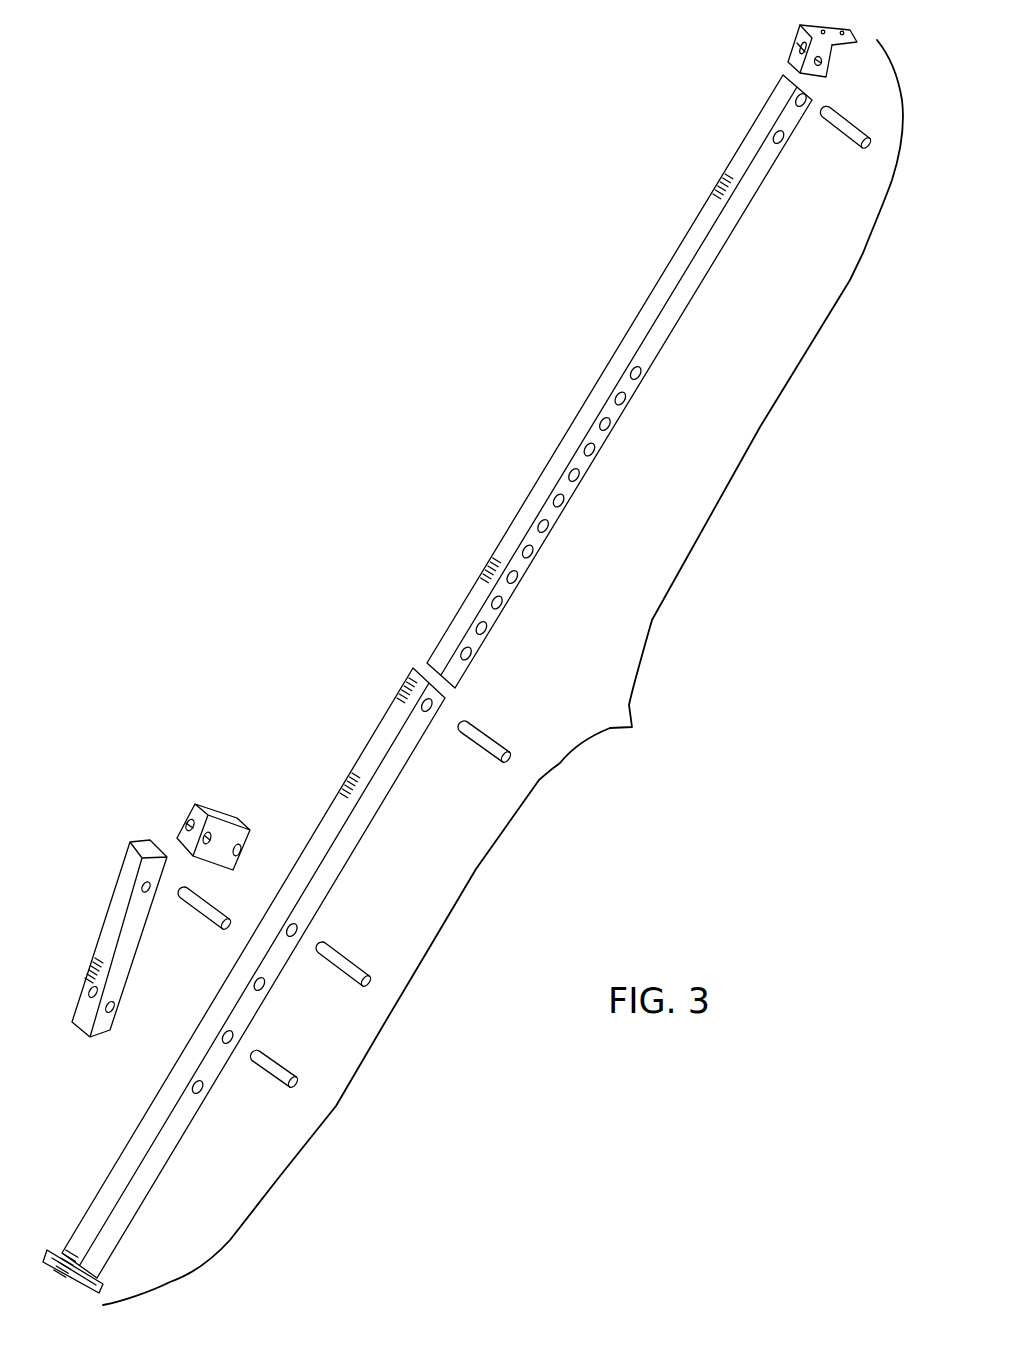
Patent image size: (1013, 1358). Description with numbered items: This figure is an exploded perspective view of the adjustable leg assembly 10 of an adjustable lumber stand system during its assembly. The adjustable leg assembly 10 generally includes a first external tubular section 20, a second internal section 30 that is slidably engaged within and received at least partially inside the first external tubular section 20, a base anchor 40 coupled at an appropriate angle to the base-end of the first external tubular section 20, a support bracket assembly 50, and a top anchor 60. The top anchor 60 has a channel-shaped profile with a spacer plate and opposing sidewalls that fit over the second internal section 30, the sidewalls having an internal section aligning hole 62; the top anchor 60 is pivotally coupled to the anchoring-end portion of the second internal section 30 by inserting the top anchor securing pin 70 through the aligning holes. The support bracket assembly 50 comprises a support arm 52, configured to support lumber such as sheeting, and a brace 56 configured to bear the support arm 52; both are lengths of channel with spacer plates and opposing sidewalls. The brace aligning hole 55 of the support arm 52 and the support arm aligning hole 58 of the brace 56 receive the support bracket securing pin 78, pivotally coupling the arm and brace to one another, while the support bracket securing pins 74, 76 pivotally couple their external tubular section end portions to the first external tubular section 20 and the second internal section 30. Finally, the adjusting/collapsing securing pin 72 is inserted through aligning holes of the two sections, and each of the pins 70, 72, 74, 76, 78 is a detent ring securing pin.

The adjustable leg assembly 10 is at (260, 418).
The first external tubular section 20 is at (350, 828).
The second internal section 30 is at (683, 293).
The base anchor 40 is at (56, 1250).
The support bracket assembly 50 is at (105, 738).
The support arm 52 is at (196, 805).
The brace aligning hole 55 is at (188, 822).
The brace 56 is at (124, 874).
The support arm aligning hole 58 is at (148, 890).
The top anchor 60 is at (800, 26).
The internal section aligning hole 62 is at (790, 58).
The top anchor securing pin 70 is at (840, 128).
The adjusting/collapsing securing pin 72 is at (480, 737).
The support bracket securing pin 74 is at (339, 960).
The support bracket securing pin 76 is at (277, 1070).
The support bracket securing pin 78 is at (204, 913).